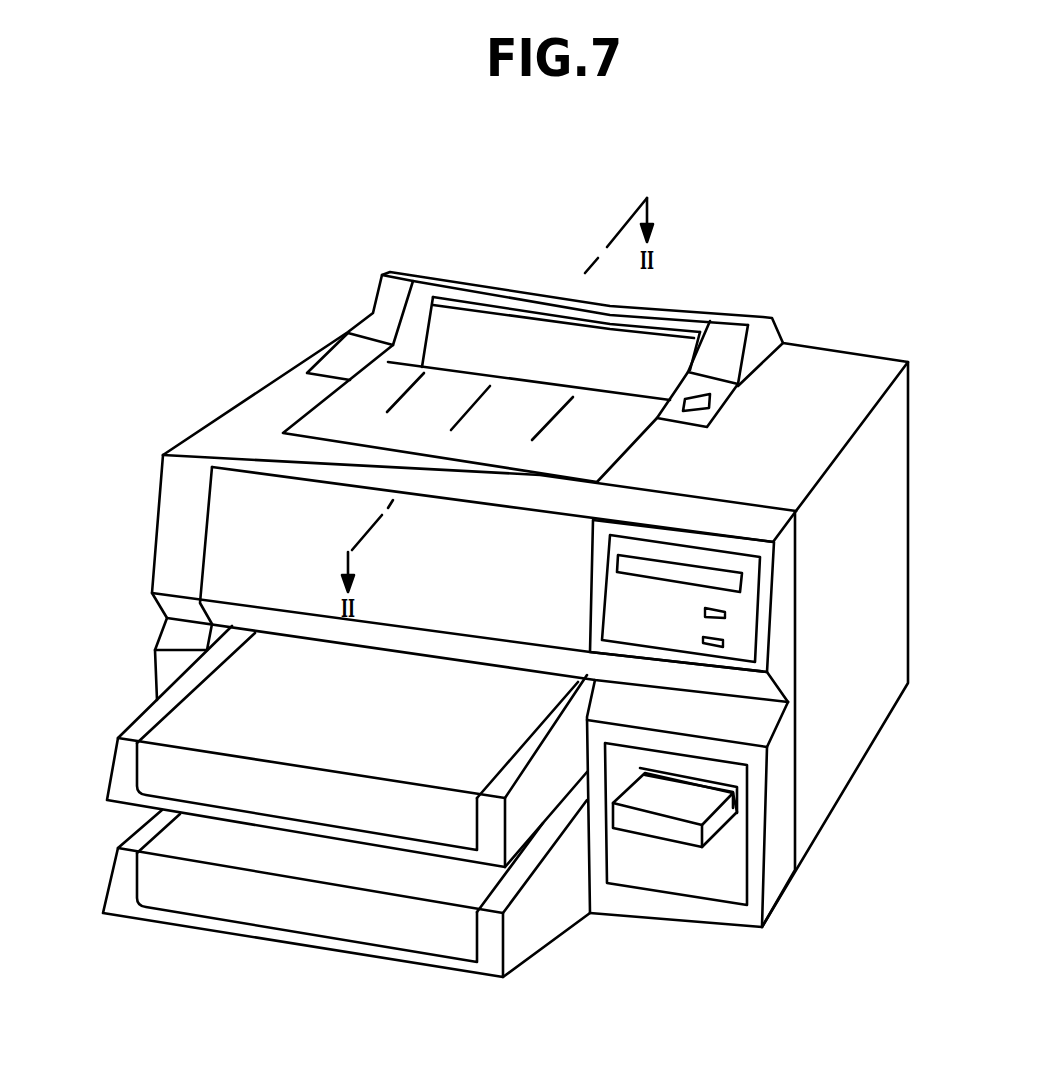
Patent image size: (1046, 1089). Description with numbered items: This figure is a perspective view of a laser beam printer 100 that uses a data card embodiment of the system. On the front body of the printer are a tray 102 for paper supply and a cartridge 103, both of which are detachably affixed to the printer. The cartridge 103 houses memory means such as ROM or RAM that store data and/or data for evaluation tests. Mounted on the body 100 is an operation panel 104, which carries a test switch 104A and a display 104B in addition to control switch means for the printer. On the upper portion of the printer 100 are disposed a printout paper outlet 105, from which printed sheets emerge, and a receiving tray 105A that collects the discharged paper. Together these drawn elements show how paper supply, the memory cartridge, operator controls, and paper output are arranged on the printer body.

The laser beam printer 100 is at (830, 363).
The tray 102 is at (343, 805).
The cartridge 103 is at (677, 808).
The operation panel 104 is at (751, 606).
The test switch 104A is at (723, 617).
The display 104B is at (731, 572).
The printout paper outlet 105 is at (515, 327).
The receiving tray 105A is at (445, 387).